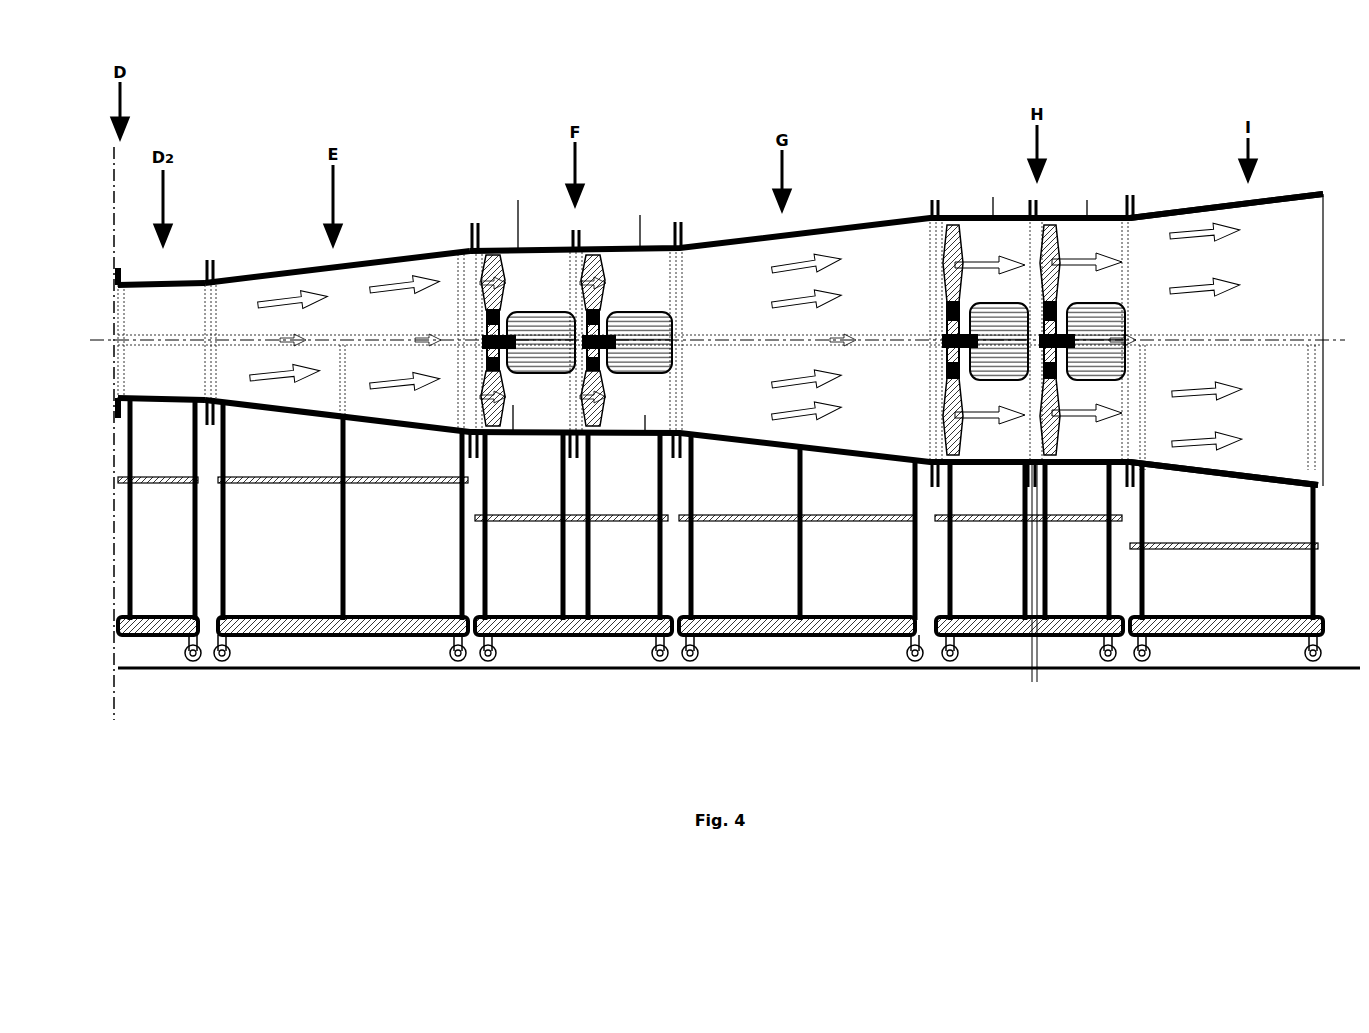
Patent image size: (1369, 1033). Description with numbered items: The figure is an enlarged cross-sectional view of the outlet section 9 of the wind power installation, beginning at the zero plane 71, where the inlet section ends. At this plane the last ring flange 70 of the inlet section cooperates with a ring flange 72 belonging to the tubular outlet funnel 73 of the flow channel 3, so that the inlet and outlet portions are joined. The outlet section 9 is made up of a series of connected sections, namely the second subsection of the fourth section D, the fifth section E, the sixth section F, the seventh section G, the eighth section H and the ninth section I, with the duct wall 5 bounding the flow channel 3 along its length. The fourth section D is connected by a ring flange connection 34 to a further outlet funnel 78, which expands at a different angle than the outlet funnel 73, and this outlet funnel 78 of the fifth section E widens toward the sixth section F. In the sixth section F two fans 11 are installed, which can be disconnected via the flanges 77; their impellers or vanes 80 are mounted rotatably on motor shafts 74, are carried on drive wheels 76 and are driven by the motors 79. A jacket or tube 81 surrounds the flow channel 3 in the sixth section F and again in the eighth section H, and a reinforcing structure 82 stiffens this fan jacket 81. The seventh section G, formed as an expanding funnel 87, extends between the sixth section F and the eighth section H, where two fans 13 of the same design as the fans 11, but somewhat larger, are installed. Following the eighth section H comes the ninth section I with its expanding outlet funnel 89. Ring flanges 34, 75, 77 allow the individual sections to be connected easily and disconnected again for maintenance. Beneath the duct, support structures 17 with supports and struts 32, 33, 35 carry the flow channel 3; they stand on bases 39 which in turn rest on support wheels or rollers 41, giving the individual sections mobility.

The flow channel 3 is at (1308, 255).
The duct wall 5 is at (812, 232).
The outlet section 9 is at (843, 765).
The fans 11 is at (513, 158).
The fans 13 is at (982, 134).
The support structures 17 is at (370, 610).
The support structure 32 is at (158, 338).
The support structure 33 is at (195, 385).
The ring flange connection 34 is at (213, 260).
The support structure 35 is at (162, 483).
The bases 39 is at (157, 625).
The support wheels 41 is at (193, 675).
The ring flange 70 is at (300, 632).
The 0 plane 71 is at (113, 165).
The ring flange 72 is at (115, 288).
The tubular outlet funnel 73 is at (177, 283).
The motor shafts 74 is at (486, 340).
The ring flanges 75 is at (474, 286).
The drive wheels 76 is at (490, 330).
The ring flanges 77 is at (580, 262).
The outlet funnel 78 is at (367, 258).
The motors 79 is at (546, 325).
The impellers 80 is at (500, 290).
The jacket 81 is at (1090, 488).
The reinforcing structure 82 is at (536, 340).
The expanding funnel 87 is at (737, 240).
The expanding outlet funnel 89 is at (1205, 205).